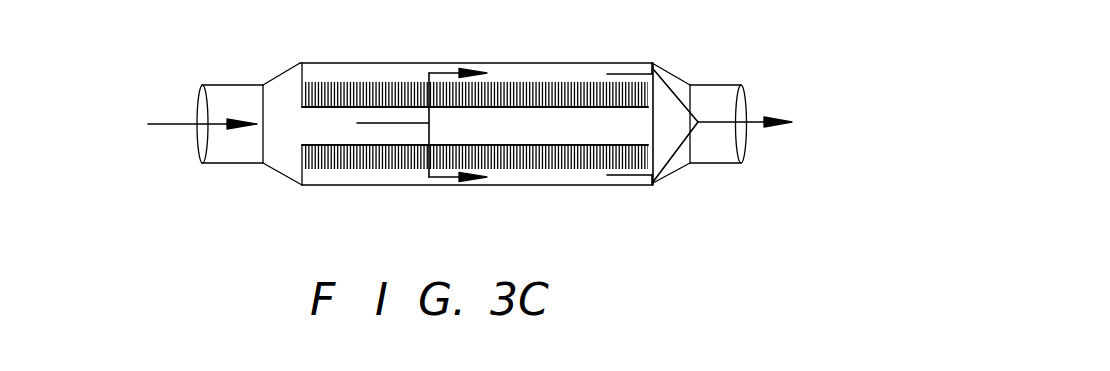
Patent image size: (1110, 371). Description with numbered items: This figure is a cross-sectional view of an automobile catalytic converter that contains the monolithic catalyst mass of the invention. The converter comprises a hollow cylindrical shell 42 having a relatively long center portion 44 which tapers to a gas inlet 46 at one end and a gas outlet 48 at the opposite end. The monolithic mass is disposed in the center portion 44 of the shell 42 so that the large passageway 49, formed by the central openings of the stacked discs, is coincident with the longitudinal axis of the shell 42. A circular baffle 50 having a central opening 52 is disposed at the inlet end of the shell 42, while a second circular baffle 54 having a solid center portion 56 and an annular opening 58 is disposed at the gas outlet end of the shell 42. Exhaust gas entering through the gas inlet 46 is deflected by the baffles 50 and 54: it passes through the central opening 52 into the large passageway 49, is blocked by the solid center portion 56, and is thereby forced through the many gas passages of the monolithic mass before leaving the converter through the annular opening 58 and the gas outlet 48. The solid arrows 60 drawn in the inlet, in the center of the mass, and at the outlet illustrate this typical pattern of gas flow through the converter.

The hollow cylindrical shell 42 is at (668, 179).
The center portion 44 is at (532, 186).
The gas inlet 46 is at (226, 163).
The gas outlet 48 is at (723, 165).
The large passageway 49 is at (528, 120).
The circular baffle 50 is at (302, 170).
The central opening 52 is at (310, 133).
The circular baffle 54 is at (656, 186).
The solid center portion 56 is at (665, 112).
The annular opening 58 is at (653, 122).
The solid arrows 60 is at (180, 122).